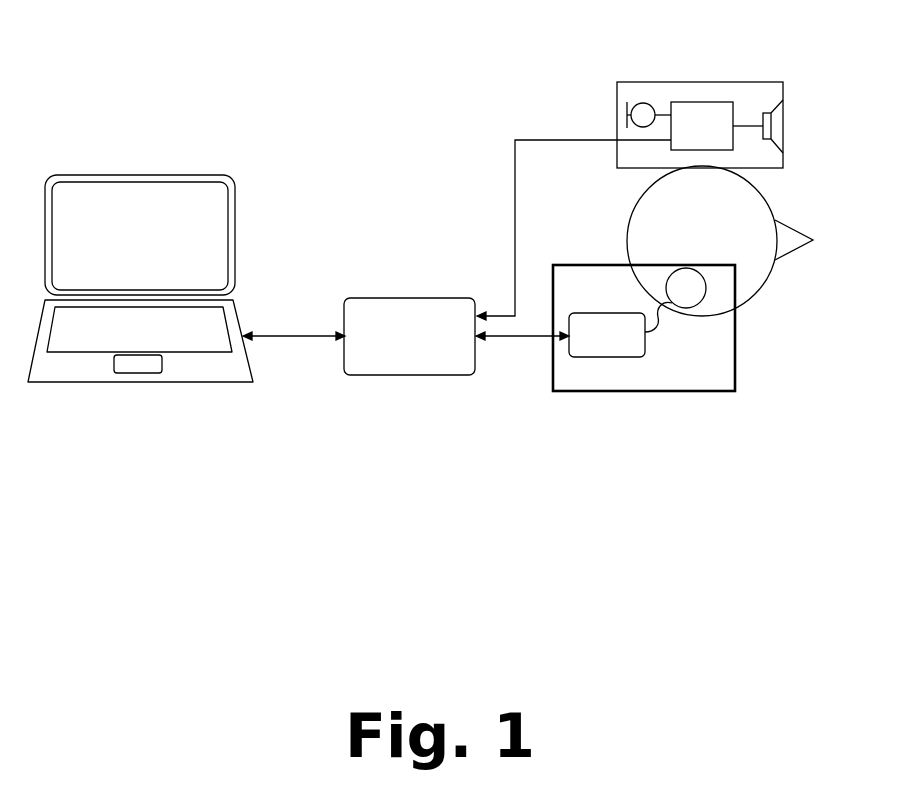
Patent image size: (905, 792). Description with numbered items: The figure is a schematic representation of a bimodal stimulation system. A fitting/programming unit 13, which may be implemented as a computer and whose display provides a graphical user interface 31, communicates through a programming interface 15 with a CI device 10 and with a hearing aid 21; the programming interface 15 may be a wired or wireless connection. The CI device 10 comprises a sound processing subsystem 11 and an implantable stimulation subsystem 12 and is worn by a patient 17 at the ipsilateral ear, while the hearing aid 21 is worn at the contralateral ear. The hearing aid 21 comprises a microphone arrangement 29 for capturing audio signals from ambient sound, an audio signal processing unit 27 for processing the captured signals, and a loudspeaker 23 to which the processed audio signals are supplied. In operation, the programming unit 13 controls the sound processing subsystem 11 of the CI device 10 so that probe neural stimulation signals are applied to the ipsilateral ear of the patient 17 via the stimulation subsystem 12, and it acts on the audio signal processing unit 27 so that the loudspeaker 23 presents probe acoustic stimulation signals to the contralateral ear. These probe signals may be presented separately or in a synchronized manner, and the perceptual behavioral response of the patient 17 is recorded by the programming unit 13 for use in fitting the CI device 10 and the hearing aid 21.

The CI device 10 is at (678, 393).
The sound processing subsystem 11 is at (633, 350).
The implantable stimulation subsystem 12 is at (697, 290).
The fitting/programming unit 13 is at (150, 163).
The programming interface 15 is at (402, 286).
The patient 17 is at (732, 217).
The hearing aid 21 is at (727, 82).
The loudspeaker 23 is at (778, 120).
The audio signal processing unit 27 is at (690, 118).
The microphone arrangement 29 is at (643, 108).
The graphical user interface 31 is at (205, 205).